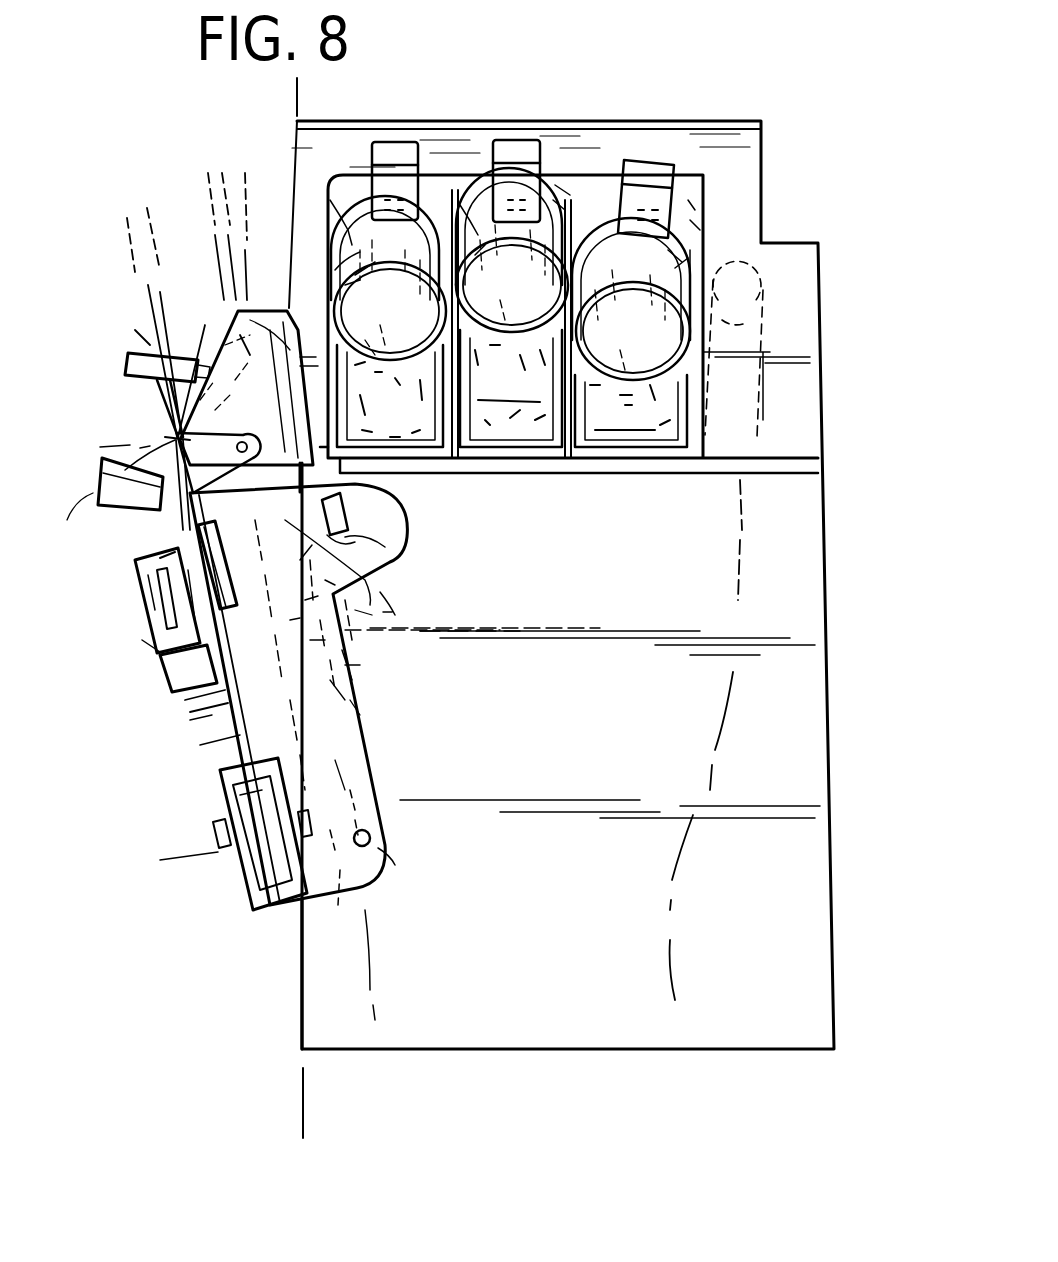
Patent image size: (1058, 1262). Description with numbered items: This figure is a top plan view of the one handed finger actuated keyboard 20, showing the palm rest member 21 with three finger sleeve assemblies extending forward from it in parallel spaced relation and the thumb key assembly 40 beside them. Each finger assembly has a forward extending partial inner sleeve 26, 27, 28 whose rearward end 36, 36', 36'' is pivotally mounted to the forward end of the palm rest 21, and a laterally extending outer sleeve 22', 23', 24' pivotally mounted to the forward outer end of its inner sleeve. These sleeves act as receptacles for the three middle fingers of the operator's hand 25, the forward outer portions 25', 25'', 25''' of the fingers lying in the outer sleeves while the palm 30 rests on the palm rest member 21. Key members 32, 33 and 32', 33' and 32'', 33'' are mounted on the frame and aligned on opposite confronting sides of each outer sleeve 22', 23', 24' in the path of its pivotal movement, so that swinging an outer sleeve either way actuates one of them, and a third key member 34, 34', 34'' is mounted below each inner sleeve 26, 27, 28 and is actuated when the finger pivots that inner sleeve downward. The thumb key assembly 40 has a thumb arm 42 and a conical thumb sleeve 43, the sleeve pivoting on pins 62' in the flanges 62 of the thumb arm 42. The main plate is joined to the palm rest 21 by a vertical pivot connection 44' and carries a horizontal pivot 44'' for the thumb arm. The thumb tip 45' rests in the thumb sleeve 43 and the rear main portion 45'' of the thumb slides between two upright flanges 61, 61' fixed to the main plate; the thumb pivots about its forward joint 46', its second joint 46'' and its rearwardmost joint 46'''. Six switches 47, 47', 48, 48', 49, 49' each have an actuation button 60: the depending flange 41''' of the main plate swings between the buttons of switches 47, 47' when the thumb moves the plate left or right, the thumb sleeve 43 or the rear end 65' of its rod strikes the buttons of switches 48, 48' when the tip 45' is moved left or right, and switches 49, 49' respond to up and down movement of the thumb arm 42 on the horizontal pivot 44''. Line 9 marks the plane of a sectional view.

The section line 9- 9 is at (286, 103).
The one handed finger actuated keyboard 20 is at (841, 485).
The palm rest member 21 is at (320, 980).
The laterally extending outer sleeve 22' is at (386, 263).
The laterally extending outer sleeve 23' is at (509, 264).
The laterally extending outer sleeve 24' is at (631, 261).
The operator's hand 25 is at (348, 965).
The forward outer portion of finger 25' is at (335, 228).
The forward outer portion of finger 25'' is at (454, 215).
The forward outer portion of finger 25''' is at (725, 196).
The partial inner sleeve 26 is at (455, 462).
The partial inner sleeve 27 is at (540, 462).
The partial inner sleeve 28 is at (685, 460).
The palm 30 is at (680, 545).
The key member 32 is at (395, 149).
The key member 32' is at (521, 147).
The key member 32'' is at (651, 155).
The key member 33 is at (327, 260).
The key member 33' is at (569, 176).
The key member 33'' is at (718, 257).
The third key member 34 is at (388, 399).
The third key member 34' is at (510, 385).
The third key member 34'' is at (676, 407).
The rearward end pivotal mounting of inner sleeve 36 is at (397, 383).
The rearward end pivotal mounting of inner sleeve 36' is at (512, 378).
The rearward end pivotal mounting of inner sleeve 36'' is at (633, 385).
The thumb key assembly 40 is at (283, 694).
The depending flange 41''' is at (386, 680).
The thumb arm 42 is at (181, 701).
The thumb sleeve 43 is at (262, 310).
The vertical pivot connection 44' is at (425, 866).
The horizontal pivot 44'' is at (236, 834).
The thumb tip 45' is at (188, 305).
The rear main portion of thumb 45'' is at (472, 611).
The front joint of thumb 46' is at (90, 446).
The second joint of thumb 46'' is at (182, 731).
The rearwardmost joint of thumb 46''' is at (342, 868).
The switch 47 is at (412, 594).
The switch 47' is at (161, 669).
The switch 48 is at (139, 351).
The switch 48' is at (95, 509).
The switch 49 is at (131, 600).
The switch 49' is at (111, 641).
The actuation button 60 is at (160, 355).
The upright flange 61 is at (221, 565).
The upright flange 61' is at (388, 531).
The flanges of thumb arm 62 is at (166, 439).
The pins 62' is at (149, 427).
The rear end of rod 65' is at (133, 573).